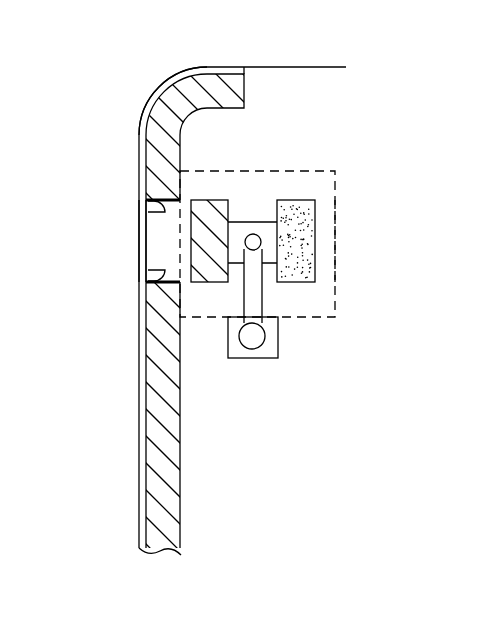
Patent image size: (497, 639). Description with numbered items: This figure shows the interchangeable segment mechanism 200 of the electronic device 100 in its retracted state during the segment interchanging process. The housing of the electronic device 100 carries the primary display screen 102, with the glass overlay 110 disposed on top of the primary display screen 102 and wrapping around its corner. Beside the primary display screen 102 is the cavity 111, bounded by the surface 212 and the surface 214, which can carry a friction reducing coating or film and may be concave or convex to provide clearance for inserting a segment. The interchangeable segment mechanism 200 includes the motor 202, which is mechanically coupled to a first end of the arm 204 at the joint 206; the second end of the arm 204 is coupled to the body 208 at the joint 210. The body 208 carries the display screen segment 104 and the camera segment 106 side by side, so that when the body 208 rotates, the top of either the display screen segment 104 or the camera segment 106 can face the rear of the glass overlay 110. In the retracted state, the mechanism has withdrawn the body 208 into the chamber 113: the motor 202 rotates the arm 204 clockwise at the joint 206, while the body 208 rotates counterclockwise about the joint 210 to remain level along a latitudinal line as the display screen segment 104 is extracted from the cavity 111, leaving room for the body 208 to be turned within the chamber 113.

The electronic device 100 is at (100, 101).
The primary display screen 102 is at (228, 82).
The display screen segment 104 is at (213, 203).
The camera segment 106 is at (310, 212).
The glass overlay 110 is at (163, 90).
The cavity 111 is at (157, 240).
The chamber 113 is at (327, 237).
The interchangeable segment mechanism 200 is at (302, 358).
The motor 202 is at (232, 358).
The arm 204 is at (258, 297).
The joint 206 is at (255, 342).
The body 208 is at (243, 223).
The joint 210 is at (254, 235).
The surface 212 is at (150, 211).
The surface 214 is at (150, 271).